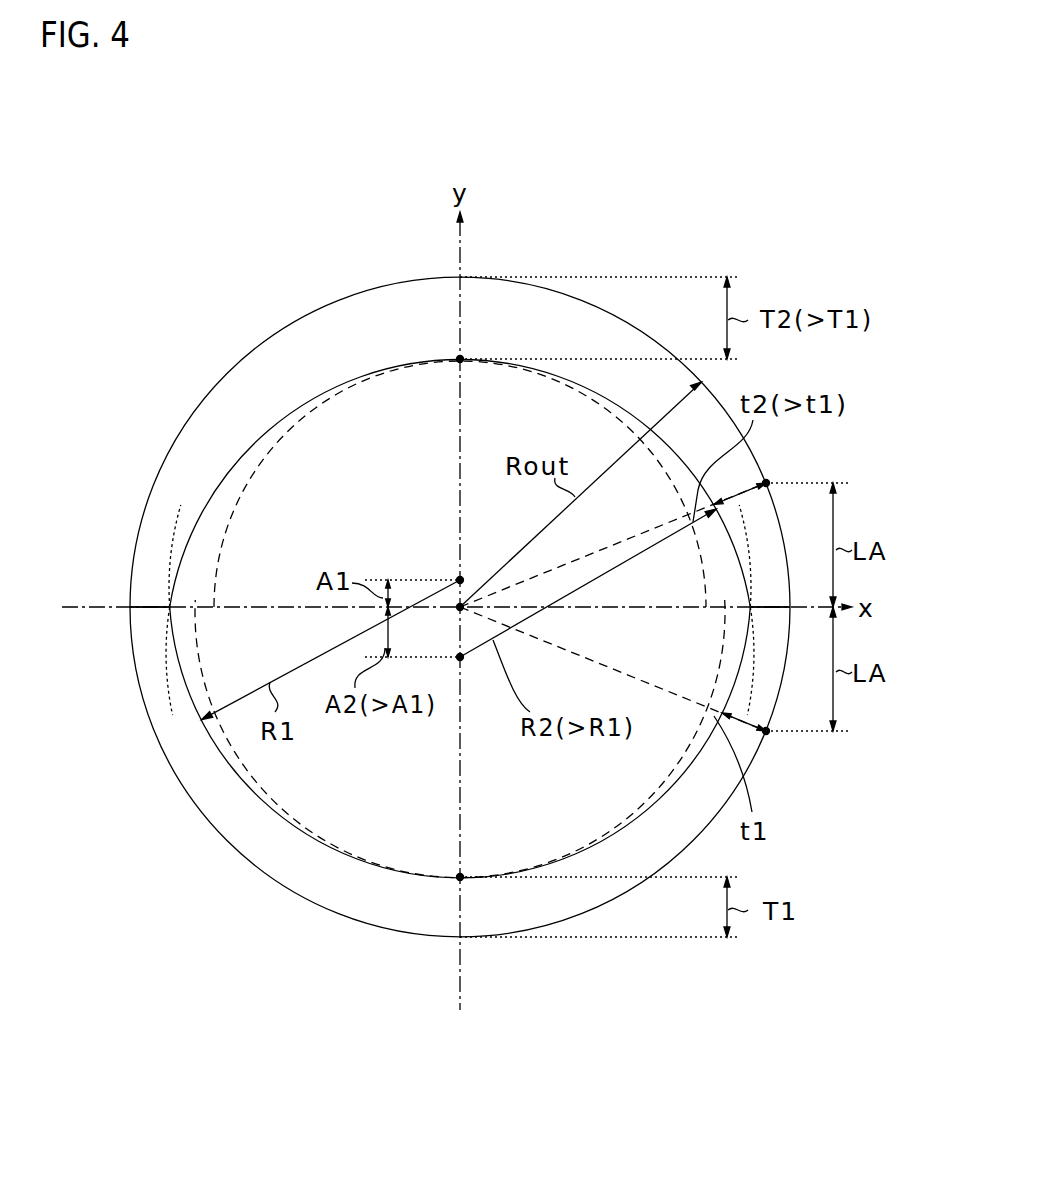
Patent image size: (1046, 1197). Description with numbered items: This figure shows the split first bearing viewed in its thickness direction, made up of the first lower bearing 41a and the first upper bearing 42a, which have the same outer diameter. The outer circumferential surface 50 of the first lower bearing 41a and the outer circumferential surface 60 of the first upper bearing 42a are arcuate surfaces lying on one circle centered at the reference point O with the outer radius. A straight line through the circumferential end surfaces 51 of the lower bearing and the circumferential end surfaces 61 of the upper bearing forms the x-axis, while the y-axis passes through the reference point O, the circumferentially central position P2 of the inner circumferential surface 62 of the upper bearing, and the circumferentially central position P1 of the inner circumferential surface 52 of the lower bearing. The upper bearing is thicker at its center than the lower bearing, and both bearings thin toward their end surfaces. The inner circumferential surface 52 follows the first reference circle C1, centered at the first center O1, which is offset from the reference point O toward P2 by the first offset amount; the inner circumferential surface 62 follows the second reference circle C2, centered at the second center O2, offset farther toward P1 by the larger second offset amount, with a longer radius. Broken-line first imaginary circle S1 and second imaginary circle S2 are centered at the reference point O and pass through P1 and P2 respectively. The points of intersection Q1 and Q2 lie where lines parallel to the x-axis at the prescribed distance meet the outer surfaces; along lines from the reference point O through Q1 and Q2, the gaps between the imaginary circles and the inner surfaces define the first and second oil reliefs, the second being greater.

The outer circumferential surface 60 is at (460, 465).
The first upper bearing 42a is at (270, 338).
The inner circumferential surface 62 is at (248, 452).
The circumferential end surfaces 61 is at (143, 617).
The outer circumferential surface 50 is at (464, 771).
The first lower bearing 41a is at (272, 880).
The inner circumferential surface 52 is at (272, 808).
The circumferential end surfaces 51 is at (150, 607).
The first reference circle C1 is at (172, 527).
The second reference circle C2 is at (162, 697).
The first imaginary circle S1 is at (674, 768).
The second imaginary circle S2 is at (672, 483).
The reference point O is at (455, 610).
The first center O1 is at (458, 579).
The second center O2 is at (462, 660).
The circumferentially central position P1 is at (458, 876).
The circumferentially central position P2 is at (458, 362).
The point of intersection Q1 is at (765, 734).
The point of intersection Q2 is at (767, 482).